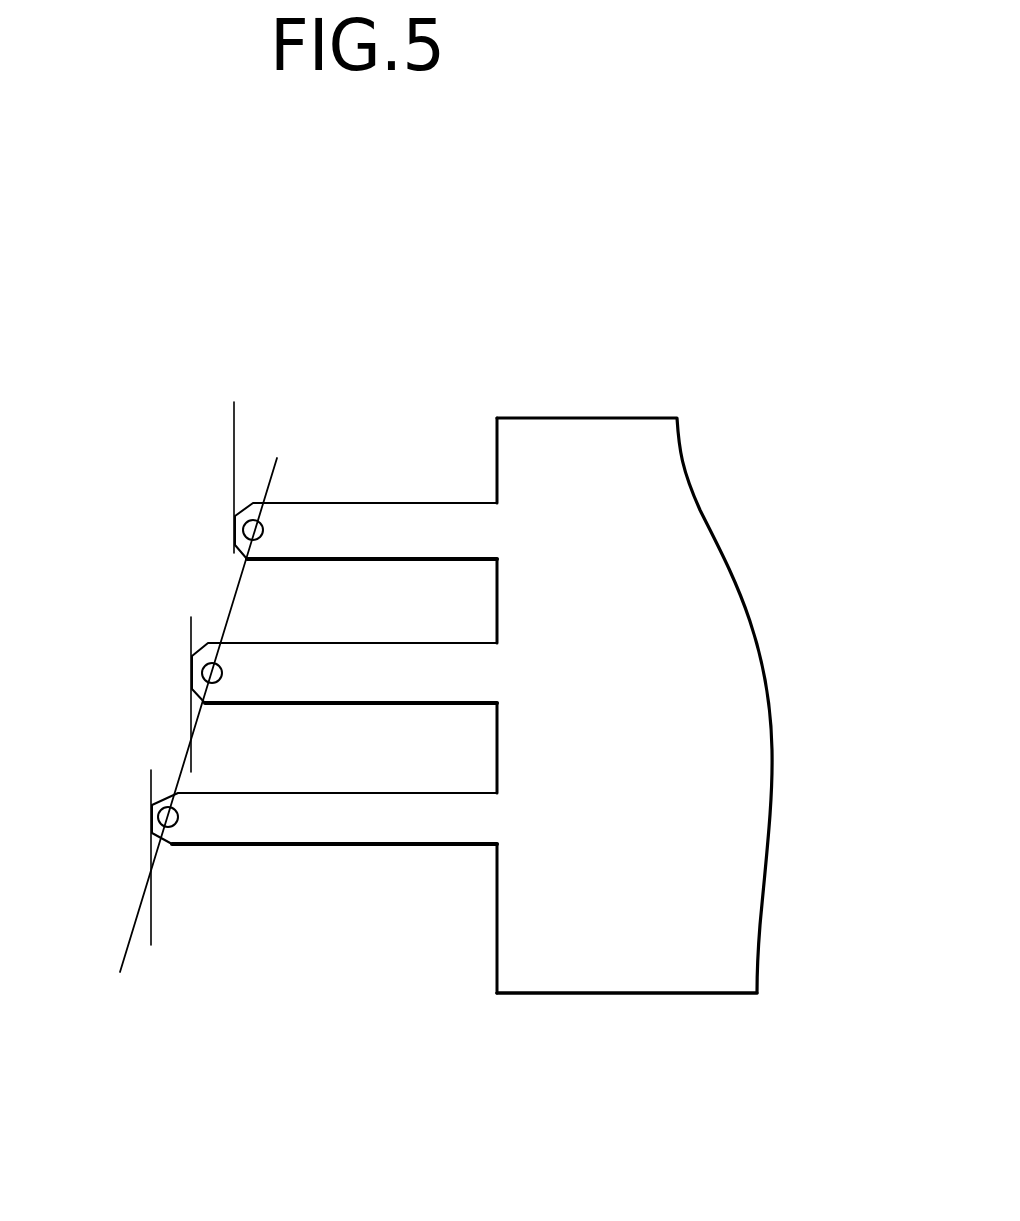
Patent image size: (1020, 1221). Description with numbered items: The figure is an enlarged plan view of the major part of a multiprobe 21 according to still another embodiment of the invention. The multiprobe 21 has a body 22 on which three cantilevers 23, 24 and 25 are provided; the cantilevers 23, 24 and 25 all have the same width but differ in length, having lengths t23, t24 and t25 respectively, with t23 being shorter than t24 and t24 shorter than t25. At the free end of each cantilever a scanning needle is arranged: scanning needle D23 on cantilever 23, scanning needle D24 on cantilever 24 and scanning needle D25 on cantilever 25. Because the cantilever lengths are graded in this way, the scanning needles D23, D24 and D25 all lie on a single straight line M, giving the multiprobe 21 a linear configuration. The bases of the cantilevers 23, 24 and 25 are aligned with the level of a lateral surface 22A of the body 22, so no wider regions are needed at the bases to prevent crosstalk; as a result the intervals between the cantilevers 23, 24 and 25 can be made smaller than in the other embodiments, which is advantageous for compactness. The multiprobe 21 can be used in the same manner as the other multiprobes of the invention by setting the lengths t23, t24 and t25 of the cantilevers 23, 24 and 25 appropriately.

The multiprobe 21 is at (442, 681).
The body 22 is at (568, 432).
The lateral surface 22A is at (497, 976).
The cantilever 23 is at (403, 512).
The cantilever 24 is at (385, 653).
The cantilever 25 is at (268, 822).
The scanning needle D23 is at (242, 529).
The scanning needle D24 is at (202, 673).
The scanning needle D25 is at (158, 817).
The straight line M is at (133, 930).
The length of cantilever 23 t23 is at (497, 427).
The length of cantilever 24 t24 is at (497, 750).
The length of cantilever 25 t25 is at (497, 910).